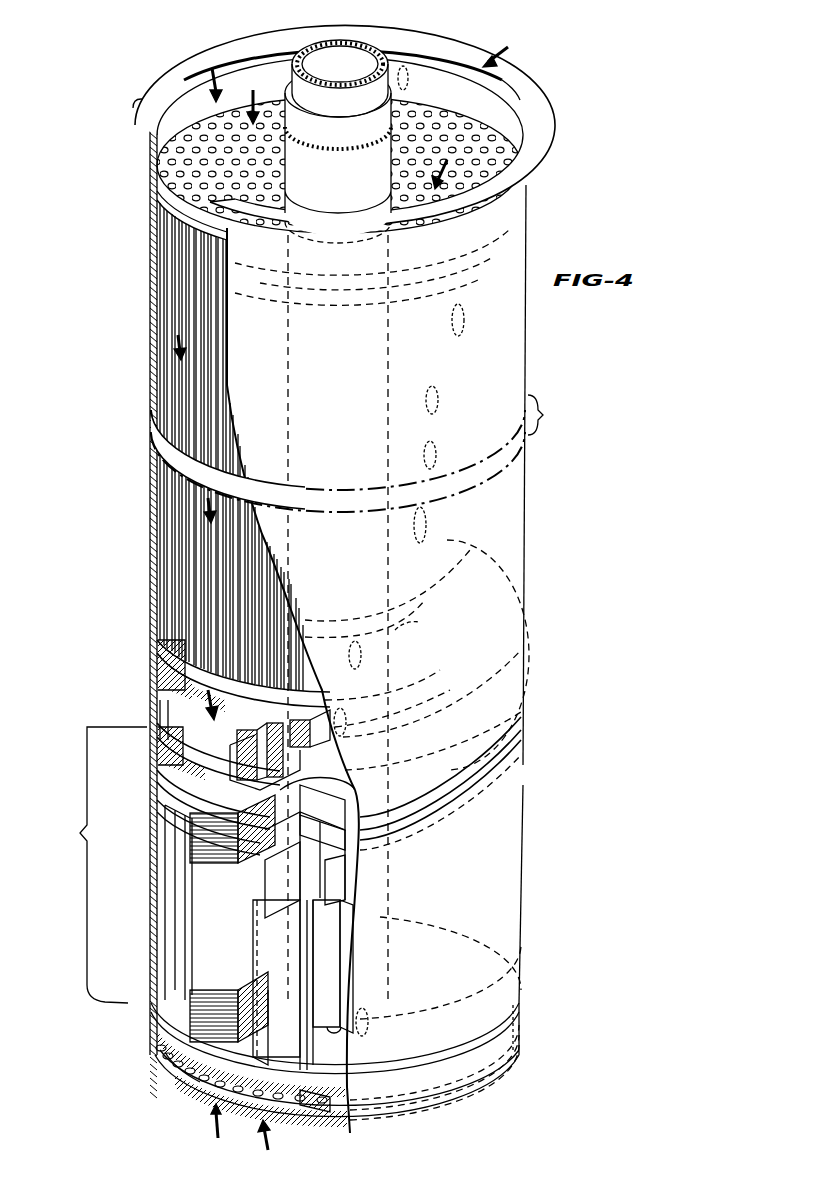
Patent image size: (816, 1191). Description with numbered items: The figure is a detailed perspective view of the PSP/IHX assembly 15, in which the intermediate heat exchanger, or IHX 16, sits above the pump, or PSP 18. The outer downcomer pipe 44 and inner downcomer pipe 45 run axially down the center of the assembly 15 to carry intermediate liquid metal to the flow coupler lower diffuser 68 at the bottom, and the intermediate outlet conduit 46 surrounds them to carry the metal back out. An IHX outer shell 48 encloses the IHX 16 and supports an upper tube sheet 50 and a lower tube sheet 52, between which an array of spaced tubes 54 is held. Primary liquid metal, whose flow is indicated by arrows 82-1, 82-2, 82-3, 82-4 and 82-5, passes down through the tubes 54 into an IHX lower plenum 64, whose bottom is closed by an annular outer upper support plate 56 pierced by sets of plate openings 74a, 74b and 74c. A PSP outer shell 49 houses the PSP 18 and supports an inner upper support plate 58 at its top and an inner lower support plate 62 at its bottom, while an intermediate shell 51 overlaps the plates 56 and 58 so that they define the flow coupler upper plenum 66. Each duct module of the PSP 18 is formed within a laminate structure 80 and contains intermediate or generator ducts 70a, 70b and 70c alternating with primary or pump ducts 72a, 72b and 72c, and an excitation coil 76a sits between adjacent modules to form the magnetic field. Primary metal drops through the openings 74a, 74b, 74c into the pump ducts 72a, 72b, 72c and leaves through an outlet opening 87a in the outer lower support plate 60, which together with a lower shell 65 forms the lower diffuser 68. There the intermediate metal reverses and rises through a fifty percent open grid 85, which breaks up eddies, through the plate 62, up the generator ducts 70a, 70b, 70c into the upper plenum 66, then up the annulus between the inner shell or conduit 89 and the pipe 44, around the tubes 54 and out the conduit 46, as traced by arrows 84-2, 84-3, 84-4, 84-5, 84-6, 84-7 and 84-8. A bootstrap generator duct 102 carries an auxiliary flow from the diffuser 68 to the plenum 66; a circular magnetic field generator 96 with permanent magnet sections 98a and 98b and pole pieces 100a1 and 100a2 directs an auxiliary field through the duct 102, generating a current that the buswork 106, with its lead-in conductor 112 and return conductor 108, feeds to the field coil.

The PSP/IHX assembly 15 is at (556, 200).
The IHX 16 is at (137, 123).
The PSP 18 is at (99, 865).
The outer downcomer pipe 44 is at (372, 52).
The inner downcomer pipe 45 is at (320, 42).
The intermediate outlet conduit 46 is at (458, 108).
The IHX outer shell 48 is at (526, 548).
The PSP outer shell 49 is at (525, 880).
The upper tube sheet 50 is at (205, 282).
The intermediate shell 51 is at (527, 745).
The lower tube sheet 52 is at (157, 632).
The tubes 54 is at (205, 388).
The outer upper support plate 56 is at (157, 722).
The inner upper support plate 58 is at (157, 781).
The outer lower support plate 60 is at (182, 1090).
The inner lower support plate 62 is at (172, 1031).
The IHX lower plenum 64 is at (147, 650).
The lower shell 65 is at (519, 1024).
The flow coupler upper plenum 66 is at (147, 727).
The flow coupler lower diffuser 68 is at (182, 1075).
The intermediate duct 70a is at (266, 815).
The intermediate duct 70b is at (315, 820).
The intermediate duct 70c is at (290, 792).
The primary duct 72a is at (205, 793).
The primary duct 72b is at (306, 798).
The primary duct 72c is at (305, 730).
The plate opening 74a is at (220, 740).
The plate opening 74b is at (228, 716).
The plate opening 74c is at (300, 700).
The excitation coil 76a is at (338, 856).
The laminate structure 80 is at (192, 857).
The primary liquid metal flow arrow 82-1 is at (212, 68).
The primary liquid metal flow arrow 82-2 is at (178, 340).
The primary liquid metal flow arrow 82-3 is at (208, 505).
The primary liquid metal flow arrow 82-4 is at (205, 705).
The primary liquid metal flow arrow 82-5 is at (274, 1152).
The intermediate liquid metal flow arrow 84-2 is at (368, 1030).
The intermediate liquid metal flow arrow 84-3 is at (325, 1108).
The intermediate liquid metal flow arrow 84-4 is at (328, 742).
The intermediate liquid metal flow arrow 84-5 is at (368, 666).
The intermediate liquid metal flow arrow 84-6 is at (420, 578).
The intermediate liquid metal flow arrow 84-7 is at (456, 296).
The intermediate liquid metal flow arrow 84-8 is at (405, 68).
The open grid 85 is at (178, 1072).
The outlet opening 87a is at (232, 1122).
The inner shell 89 is at (405, 636).
The magnetic field generator 96 is at (206, 921).
The permanent magnet section 98a is at (342, 1012).
The permanent magnet section 98b is at (182, 936).
The magnetic pole piece 100a1 is at (322, 992).
The magnetic pole piece 100a2 is at (266, 966).
The bootstrap generator duct 102 is at (292, 866).
The bootstrap generator buswork 106 is at (342, 893).
The return conductor 108 is at (272, 944).
The lead-in conductor 112 is at (305, 888).